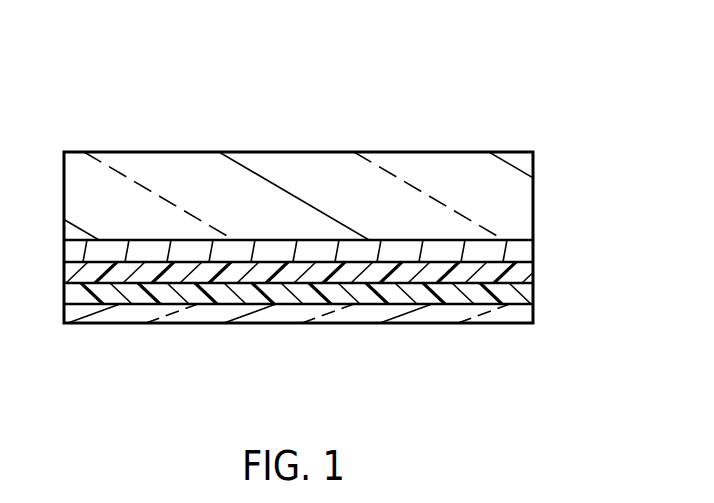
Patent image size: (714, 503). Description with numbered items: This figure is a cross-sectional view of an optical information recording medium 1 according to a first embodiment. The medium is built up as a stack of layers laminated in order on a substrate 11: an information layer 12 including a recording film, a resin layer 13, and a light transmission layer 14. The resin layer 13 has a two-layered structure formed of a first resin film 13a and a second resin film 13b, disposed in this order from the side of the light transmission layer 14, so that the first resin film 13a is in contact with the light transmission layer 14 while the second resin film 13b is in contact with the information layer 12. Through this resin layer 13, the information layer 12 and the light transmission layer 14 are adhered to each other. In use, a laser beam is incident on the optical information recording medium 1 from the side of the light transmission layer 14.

The optical information recording medium 1 is at (96, 105).
The substrate 11 is at (521, 190).
The information layer 12 is at (520, 254).
The resin layer 13 is at (367, 285).
The first resin film 13a is at (520, 293).
The second resin film 13b is at (520, 273).
The light transmission layer 14 is at (522, 317).